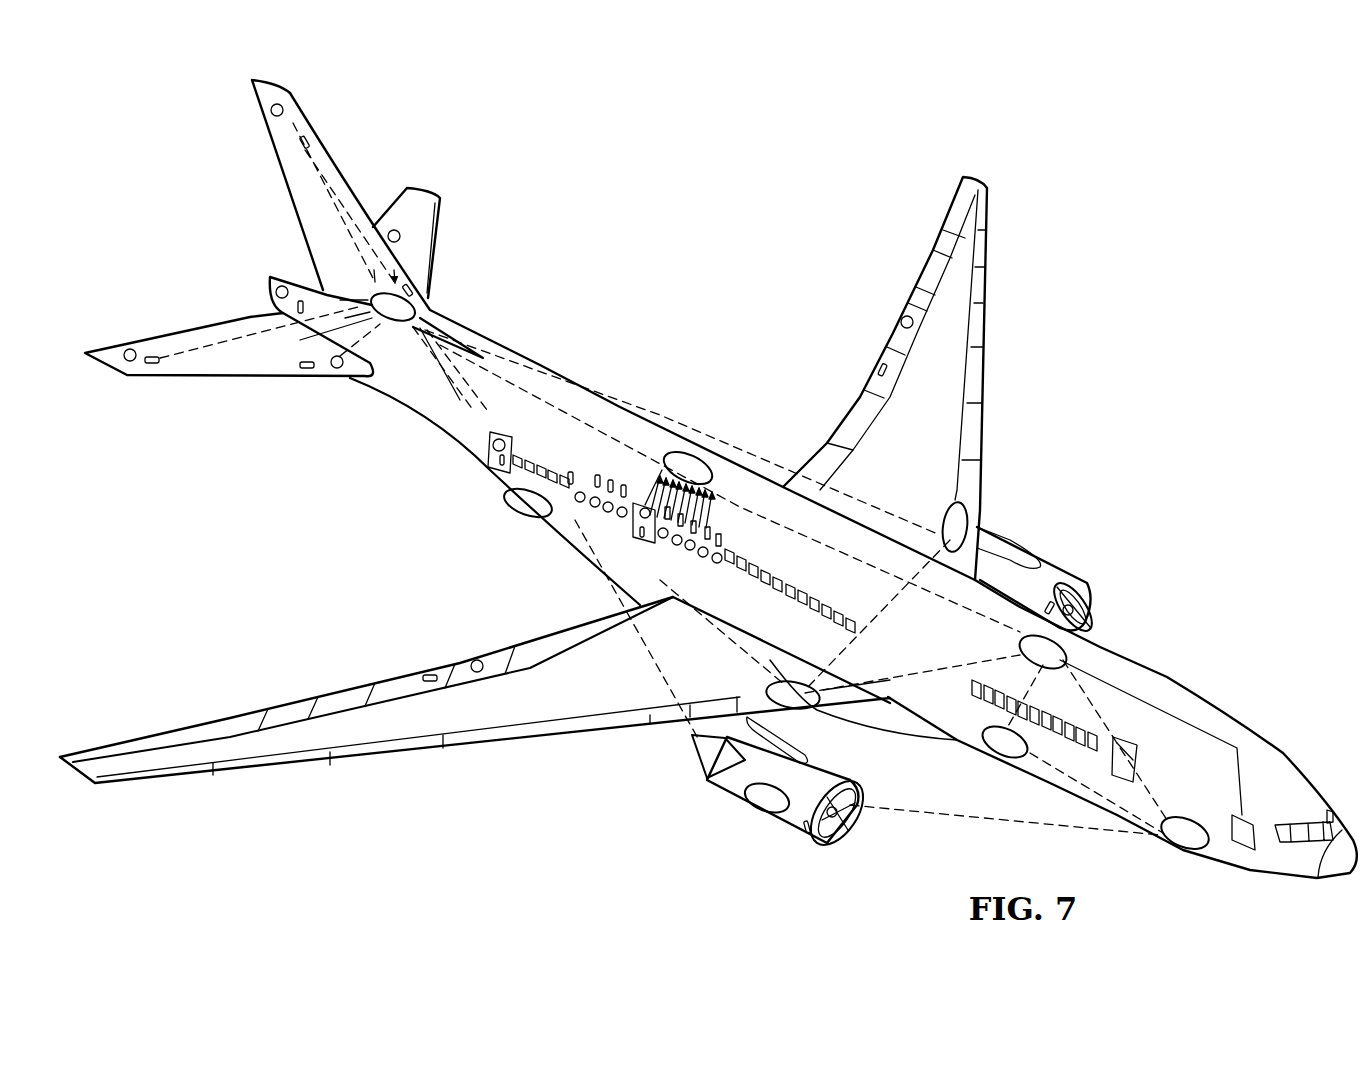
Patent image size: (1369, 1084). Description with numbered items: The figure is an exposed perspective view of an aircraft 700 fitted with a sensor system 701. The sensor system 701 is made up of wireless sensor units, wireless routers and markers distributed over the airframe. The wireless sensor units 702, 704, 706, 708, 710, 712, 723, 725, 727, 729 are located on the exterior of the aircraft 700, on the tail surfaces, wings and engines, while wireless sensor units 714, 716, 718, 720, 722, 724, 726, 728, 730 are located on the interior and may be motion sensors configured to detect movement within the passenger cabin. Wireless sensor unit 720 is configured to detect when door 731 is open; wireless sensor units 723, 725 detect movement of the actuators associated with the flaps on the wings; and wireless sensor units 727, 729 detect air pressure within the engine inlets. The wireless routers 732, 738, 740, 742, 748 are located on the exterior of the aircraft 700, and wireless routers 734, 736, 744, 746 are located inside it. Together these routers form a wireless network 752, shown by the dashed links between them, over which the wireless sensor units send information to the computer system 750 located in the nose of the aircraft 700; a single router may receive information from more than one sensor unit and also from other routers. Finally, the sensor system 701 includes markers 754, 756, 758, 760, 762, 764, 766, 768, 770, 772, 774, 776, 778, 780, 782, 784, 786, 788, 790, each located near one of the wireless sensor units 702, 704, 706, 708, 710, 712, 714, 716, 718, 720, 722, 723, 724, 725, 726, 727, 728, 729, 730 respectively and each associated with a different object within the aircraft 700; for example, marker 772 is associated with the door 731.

The aircraft 700 is at (1263, 728).
The sensor system 701 is at (292, 103).
The wireless sensor unit 702 is at (270, 110).
The wireless sensor unit 704 is at (393, 230).
The wireless sensor unit 706 is at (128, 362).
The wireless sensor unit 708 is at (282, 285).
The wireless sensor unit 710 is at (333, 368).
The wireless sensor unit 712 is at (488, 447).
The wireless sensor unit 714 is at (581, 492).
The wireless sensor unit 716 is at (575, 478).
The wireless sensor unit 718 is at (650, 480).
The wireless sensor unit 720 is at (525, 512).
The wireless sensor unit 722 is at (662, 540).
The wireless sensor unit 723 is at (475, 660).
The wireless sensor unit 724 is at (676, 548).
The wireless sensor unit 725 is at (905, 315).
The wireless sensor unit 726 is at (690, 553).
The wireless sensor unit 727 is at (836, 822).
The wireless sensor unit 728 is at (703, 560).
The wireless sensor unit 729 is at (1075, 605).
The wireless sensor unit 730 is at (718, 565).
The door 731 is at (662, 462).
The wireless router 732 is at (415, 305).
The wireless router 734 is at (512, 490).
The wireless router 736 is at (705, 455).
The wireless router 738 is at (762, 812).
The wireless router 740 is at (818, 700).
The wireless router 742 is at (945, 515).
The wireless router 744 is at (1068, 655).
The wireless router 746 is at (990, 750).
The wireless router 748 is at (1195, 848).
The computer system 750 is at (1255, 850).
The wireless network 752 is at (503, 423).
The marker 754 is at (310, 140).
The marker 756 is at (413, 285).
The marker 758 is at (150, 355).
The marker 760 is at (295, 306).
The marker 762 is at (303, 368).
The marker 764 is at (500, 465).
The marker 766 is at (597, 474).
The marker 768 is at (610, 479).
The marker 770 is at (623, 484).
The marker 772 is at (593, 507).
The marker 774 is at (607, 513).
The marker 776 is at (428, 675).
The marker 778 is at (640, 535).
The marker 780 is at (880, 365).
The marker 782 is at (660, 520).
The marker 784 is at (806, 838).
The marker 786 is at (712, 535).
The marker 788 is at (1060, 575).
The marker 790 is at (790, 591).